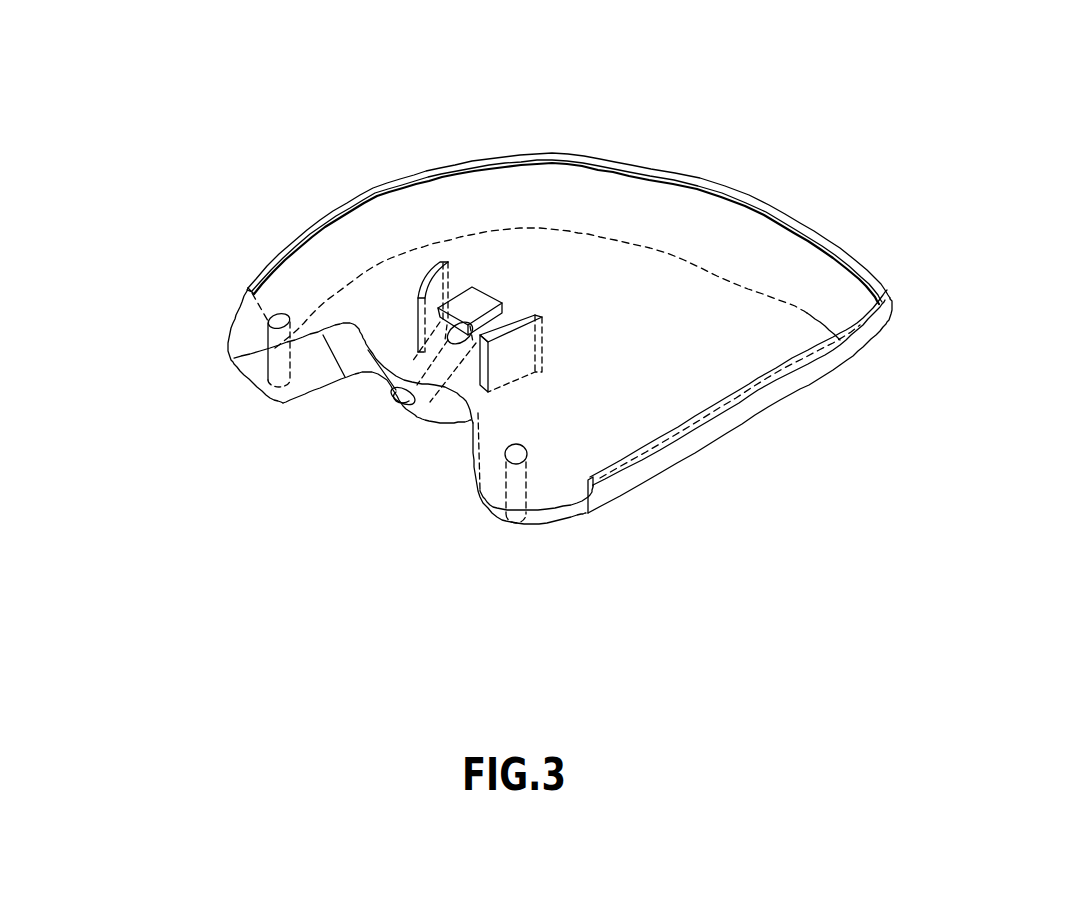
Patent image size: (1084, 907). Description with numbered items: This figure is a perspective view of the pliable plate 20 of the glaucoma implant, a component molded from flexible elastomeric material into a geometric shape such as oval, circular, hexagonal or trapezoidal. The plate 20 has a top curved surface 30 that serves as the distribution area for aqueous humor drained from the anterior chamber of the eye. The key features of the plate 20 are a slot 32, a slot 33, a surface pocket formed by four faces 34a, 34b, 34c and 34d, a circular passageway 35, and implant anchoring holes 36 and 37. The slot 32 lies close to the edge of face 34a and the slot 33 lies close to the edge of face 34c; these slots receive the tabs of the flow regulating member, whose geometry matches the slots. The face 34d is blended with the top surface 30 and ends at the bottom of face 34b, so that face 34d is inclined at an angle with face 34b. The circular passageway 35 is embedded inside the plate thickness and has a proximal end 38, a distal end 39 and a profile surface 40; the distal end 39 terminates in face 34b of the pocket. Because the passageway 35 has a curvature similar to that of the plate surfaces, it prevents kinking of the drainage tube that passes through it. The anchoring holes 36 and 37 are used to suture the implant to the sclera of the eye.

The pliable plate 20 is at (685, 450).
The top curved surface 30 is at (733, 251).
The slot 32 is at (553, 353).
The slot 33 is at (417, 323).
The face of surface pocket 34a is at (502, 305).
The face of surface pocket 34b is at (467, 340).
The face of surface pocket 34c is at (453, 336).
The face of surface pocket 34d is at (477, 293).
The circular passageway 35 is at (425, 368).
The implant anchoring hole 36 is at (528, 483).
The implant anchoring hole 37 is at (272, 341).
The proximal end of passageway 38 is at (410, 398).
The distal end of passageway 39 is at (483, 300).
The profile surface of passageway 40 is at (403, 360).